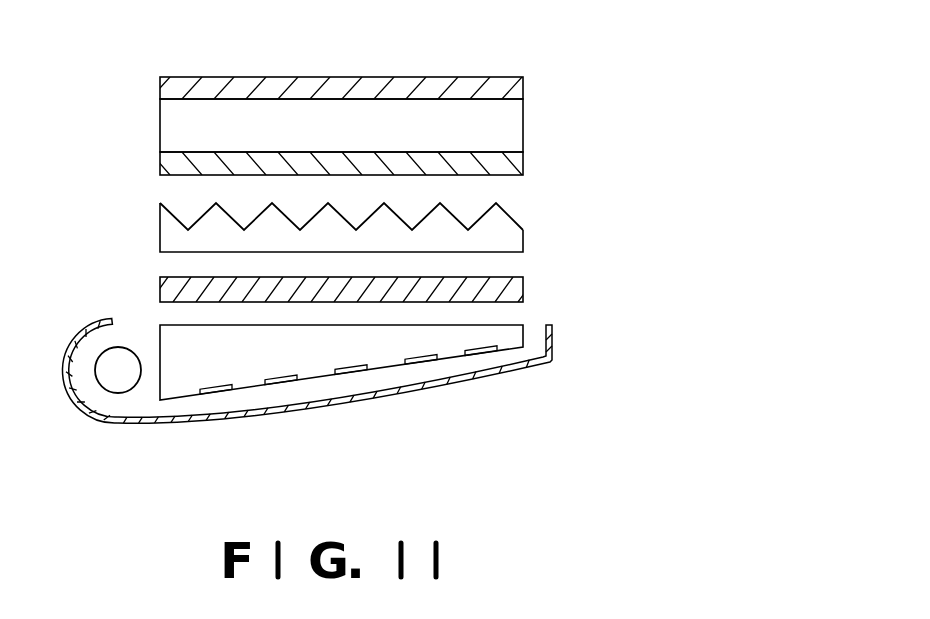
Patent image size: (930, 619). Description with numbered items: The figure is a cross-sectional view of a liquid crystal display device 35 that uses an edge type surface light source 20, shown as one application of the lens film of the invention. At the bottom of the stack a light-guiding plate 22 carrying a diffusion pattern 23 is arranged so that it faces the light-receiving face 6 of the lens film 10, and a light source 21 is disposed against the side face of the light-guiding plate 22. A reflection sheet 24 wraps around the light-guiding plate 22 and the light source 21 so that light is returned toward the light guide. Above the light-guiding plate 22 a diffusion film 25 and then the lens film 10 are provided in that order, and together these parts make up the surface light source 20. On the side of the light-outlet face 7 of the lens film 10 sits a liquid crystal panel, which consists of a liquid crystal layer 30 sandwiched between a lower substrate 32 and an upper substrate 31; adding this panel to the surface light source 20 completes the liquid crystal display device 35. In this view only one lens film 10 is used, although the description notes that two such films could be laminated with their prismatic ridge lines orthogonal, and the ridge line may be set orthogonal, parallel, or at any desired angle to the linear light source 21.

The liquid crystal display device 35 is at (387, 88).
The upper substrate 31 is at (520, 88).
The liquid crystal layer 30 is at (517, 125).
The lower substrate 32 is at (520, 160).
The surface light source 20 is at (623, 198).
The lens film 10 is at (389, 230).
The light-outlet face 7 is at (465, 212).
The light-receiving face 6 is at (490, 253).
The diffusion film 25 is at (523, 292).
The light-guiding plate 22 is at (180, 385).
The diffusion pattern 23 is at (353, 380).
The light source 21 is at (115, 385).
The reflection sheet 24 is at (527, 368).